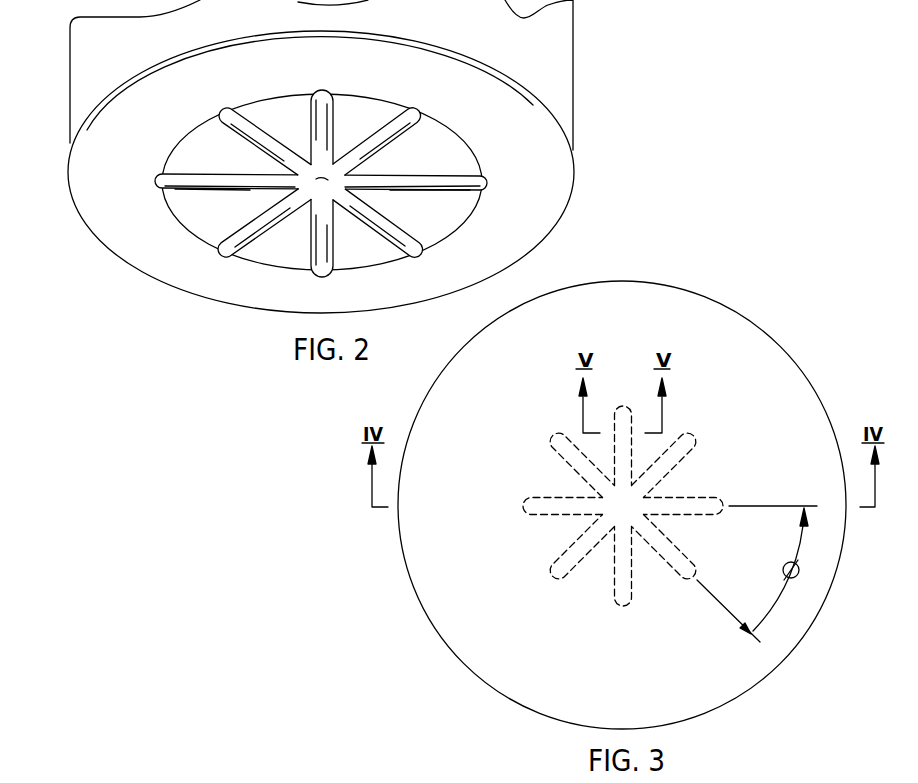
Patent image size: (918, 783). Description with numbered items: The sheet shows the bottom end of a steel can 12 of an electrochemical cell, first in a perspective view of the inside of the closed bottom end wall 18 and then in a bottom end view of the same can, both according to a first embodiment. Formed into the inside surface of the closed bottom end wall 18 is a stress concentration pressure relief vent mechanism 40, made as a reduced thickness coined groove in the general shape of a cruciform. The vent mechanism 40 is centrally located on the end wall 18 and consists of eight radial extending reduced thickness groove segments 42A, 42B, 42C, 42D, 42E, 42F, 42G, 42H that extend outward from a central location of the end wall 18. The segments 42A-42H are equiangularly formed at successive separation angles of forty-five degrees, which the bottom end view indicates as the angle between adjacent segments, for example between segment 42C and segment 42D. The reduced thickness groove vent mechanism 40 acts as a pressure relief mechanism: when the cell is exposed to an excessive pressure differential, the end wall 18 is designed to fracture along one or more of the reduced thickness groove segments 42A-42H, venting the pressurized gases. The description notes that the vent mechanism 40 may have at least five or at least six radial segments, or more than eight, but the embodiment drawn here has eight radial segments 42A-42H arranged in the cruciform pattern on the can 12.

In FIG. 2, the steel can 12 is at (563, 70).
In FIG. 2, the closed bottom end wall 18 is at (545, 190).
In FIG. 3, the closed bottom end wall 18 is at (733, 355).
In FIG. 2, the pressure relief vent mechanism 40 is at (310, 186).
In FIG. 3, the pressure relief vent mechanism 40 is at (574, 511).
In FIG. 2, the radial extending reduced thickness groove segment 42A is at (329, 93).
In FIG. 3, the radial extending reduced thickness groove segment 42A is at (633, 407).
In FIG. 2, the radial extending reduced thickness groove segment 42B is at (427, 115).
In FIG. 3, the radial extending reduced thickness groove segment 42B is at (695, 443).
In FIG. 2, the radial extending reduced thickness groove segment 42C is at (483, 185).
In FIG. 3, the radial extending reduced thickness groove segment 42C is at (725, 513).
In FIG. 2, the radial extending reduced thickness groove segment 42D is at (428, 256).
In FIG. 3, the radial extending reduced thickness groove segment 42D is at (687, 580).
In FIG. 2, the radial extending reduced thickness groove segment 42E is at (320, 280).
In FIG. 3, the radial extending reduced thickness groove segment 42E is at (615, 607).
In FIG. 2, the radial extending reduced thickness groove segment 42F is at (217, 255).
In FIG. 3, the radial extending reduced thickness groove segment 42F is at (547, 568).
In FIG. 2, the radial extending reduced thickness groove segment 42G is at (160, 188).
In FIG. 3, the radial extending reduced thickness groove segment 42G is at (523, 497).
In FIG. 2, the radial extending reduced thickness groove segment 42H is at (213, 115).
In FIG. 3, the radial extending reduced thickness groove segment 42H is at (560, 427).